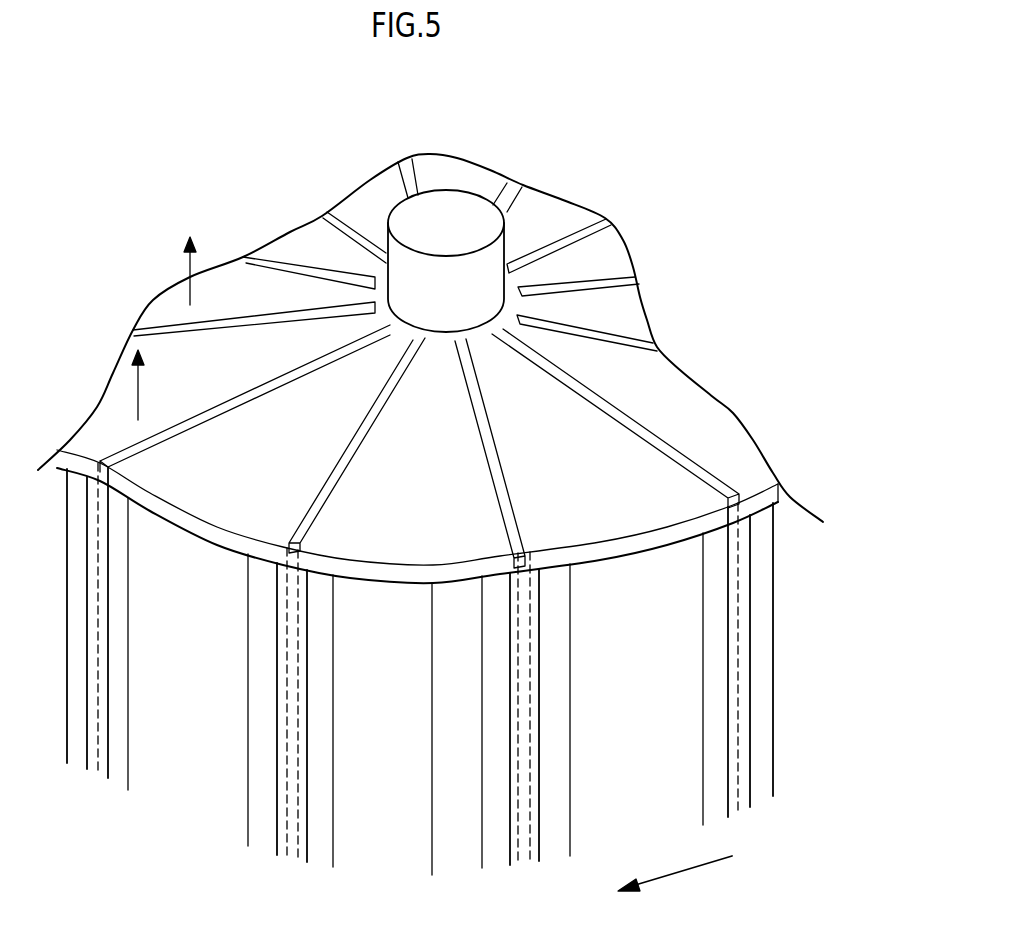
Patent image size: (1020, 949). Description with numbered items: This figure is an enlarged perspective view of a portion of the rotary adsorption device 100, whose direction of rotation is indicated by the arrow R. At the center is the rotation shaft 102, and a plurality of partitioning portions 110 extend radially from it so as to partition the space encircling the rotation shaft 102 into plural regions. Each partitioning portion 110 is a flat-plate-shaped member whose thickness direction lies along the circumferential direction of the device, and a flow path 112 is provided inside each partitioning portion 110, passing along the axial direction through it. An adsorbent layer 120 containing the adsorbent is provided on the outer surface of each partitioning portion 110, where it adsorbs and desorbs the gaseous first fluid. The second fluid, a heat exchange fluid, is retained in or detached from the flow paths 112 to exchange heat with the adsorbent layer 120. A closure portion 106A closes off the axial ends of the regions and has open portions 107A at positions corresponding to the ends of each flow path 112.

The rotary adsorption device 100 is at (645, 143).
The rotation shaft 102 is at (453, 206).
The closure portion 106A is at (708, 410).
The open portion 107A is at (243, 401).
The partitioning portion 110 is at (277, 842).
The flow path 112 is at (290, 837).
The adsorbent layer 120 is at (250, 819).